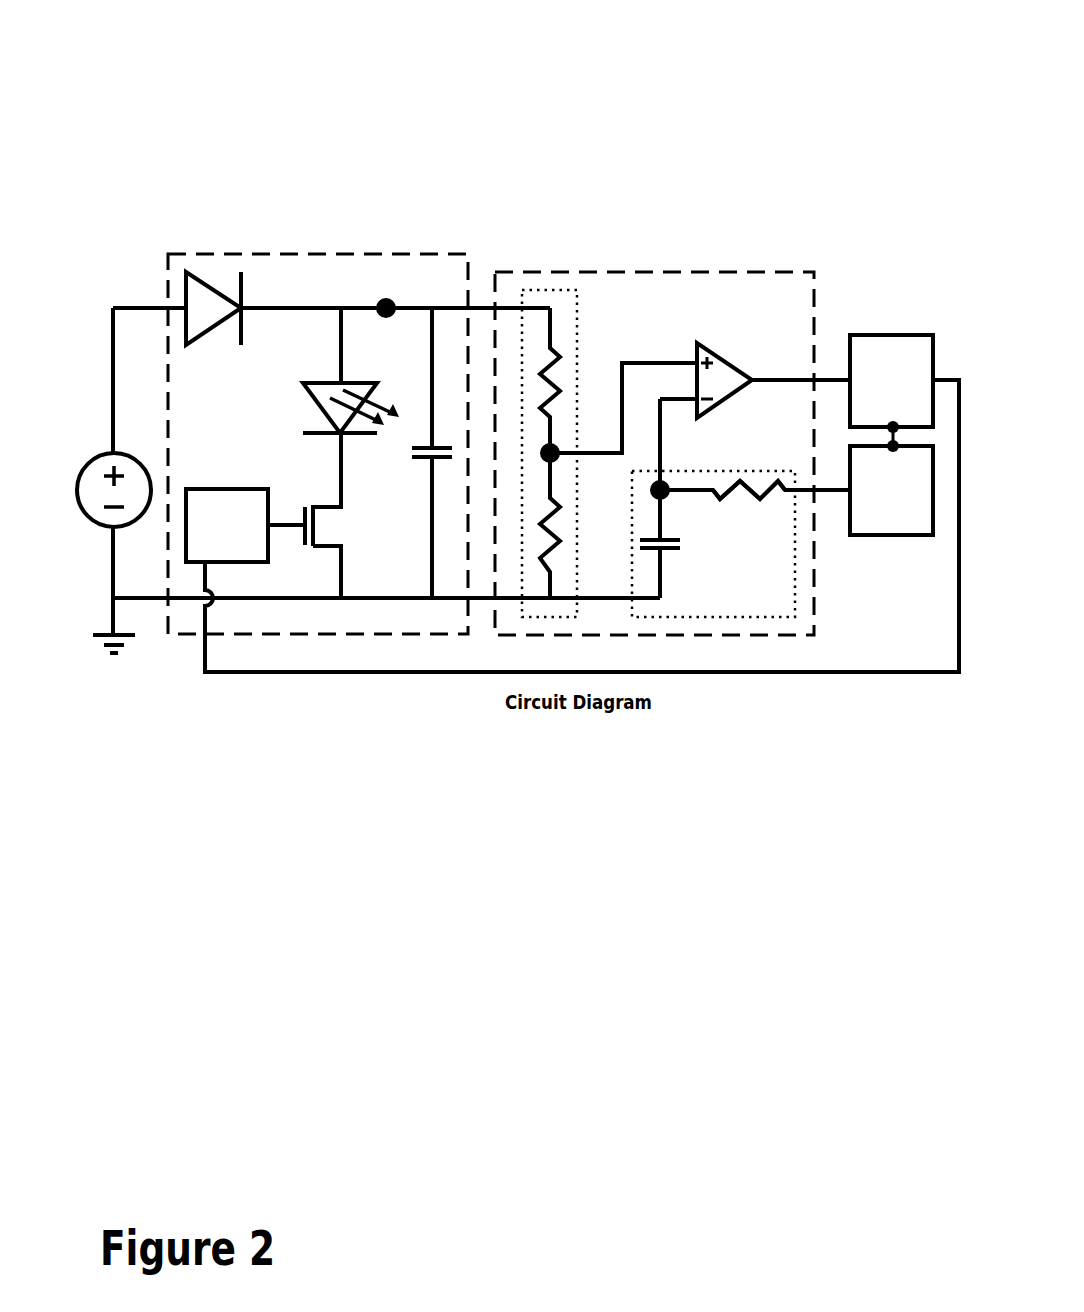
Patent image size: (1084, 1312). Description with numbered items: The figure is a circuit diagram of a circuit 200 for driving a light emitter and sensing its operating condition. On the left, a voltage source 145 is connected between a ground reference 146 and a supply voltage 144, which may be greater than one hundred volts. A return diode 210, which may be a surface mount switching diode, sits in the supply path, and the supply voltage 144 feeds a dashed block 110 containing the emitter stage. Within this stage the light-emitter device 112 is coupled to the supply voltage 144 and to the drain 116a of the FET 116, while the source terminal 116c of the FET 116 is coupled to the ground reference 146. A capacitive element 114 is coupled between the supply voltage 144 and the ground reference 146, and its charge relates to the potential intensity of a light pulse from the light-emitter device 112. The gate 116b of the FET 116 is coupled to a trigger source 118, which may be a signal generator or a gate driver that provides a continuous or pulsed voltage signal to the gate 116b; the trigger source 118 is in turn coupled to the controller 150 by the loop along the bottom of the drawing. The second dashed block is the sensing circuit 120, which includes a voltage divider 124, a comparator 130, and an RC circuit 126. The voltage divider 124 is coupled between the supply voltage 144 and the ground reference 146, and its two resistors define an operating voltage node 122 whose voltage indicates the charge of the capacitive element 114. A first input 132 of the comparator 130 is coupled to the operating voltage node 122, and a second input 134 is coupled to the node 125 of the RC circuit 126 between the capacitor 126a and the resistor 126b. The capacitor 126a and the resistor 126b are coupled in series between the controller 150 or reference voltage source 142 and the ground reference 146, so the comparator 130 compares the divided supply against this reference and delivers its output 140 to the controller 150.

The circuit 200 is at (876, 74).
The light emitting subsystem 110 is at (304, 254).
The return diode 210 is at (206, 280).
The supply voltage 144 is at (380, 300).
The light-emitter device 112 is at (315, 399).
The capacitive element 114 is at (422, 460).
The FET 116 is at (315, 535).
The drain 116a is at (328, 505).
The gate 116b is at (283, 530).
The source terminal 116c is at (336, 552).
The trigger source 118 is at (227, 525).
The voltage source 145 is at (110, 455).
The ground reference 146 is at (110, 622).
The sensing circuit 120 is at (635, 272).
The voltage divider 124 is at (577, 338).
The operating voltage node 122 is at (553, 462).
The first input 132 is at (690, 361).
The second input 134 is at (690, 397).
The comparator 130 is at (717, 352).
The output 140 is at (756, 383).
The RC circuit 126 is at (687, 471).
The node 125 is at (652, 500).
The capacitor 126a is at (670, 552).
The resistor 126b is at (777, 485).
The controller 150 is at (891, 381).
The reference voltage source 142 is at (891, 490).